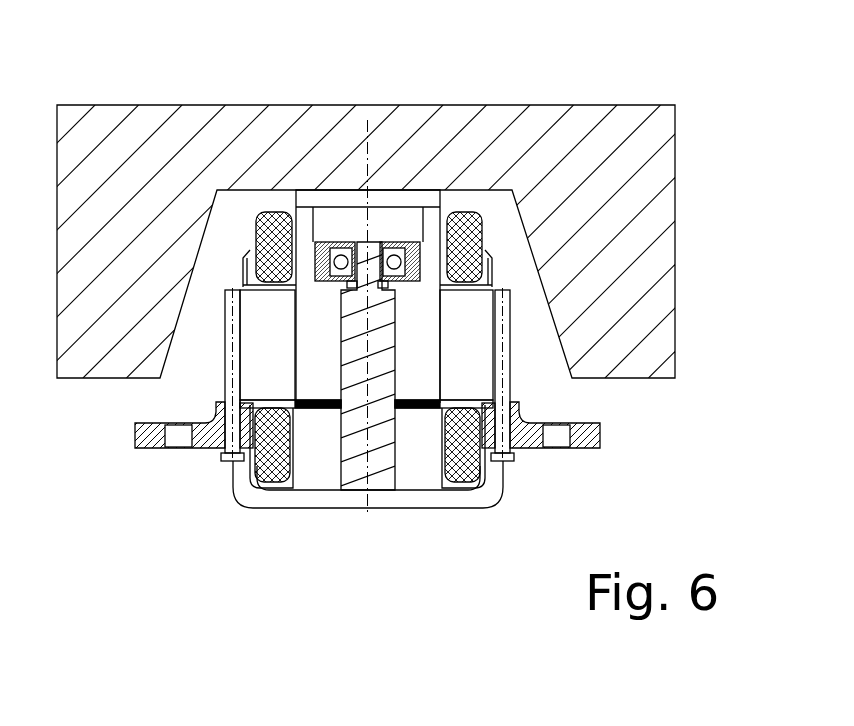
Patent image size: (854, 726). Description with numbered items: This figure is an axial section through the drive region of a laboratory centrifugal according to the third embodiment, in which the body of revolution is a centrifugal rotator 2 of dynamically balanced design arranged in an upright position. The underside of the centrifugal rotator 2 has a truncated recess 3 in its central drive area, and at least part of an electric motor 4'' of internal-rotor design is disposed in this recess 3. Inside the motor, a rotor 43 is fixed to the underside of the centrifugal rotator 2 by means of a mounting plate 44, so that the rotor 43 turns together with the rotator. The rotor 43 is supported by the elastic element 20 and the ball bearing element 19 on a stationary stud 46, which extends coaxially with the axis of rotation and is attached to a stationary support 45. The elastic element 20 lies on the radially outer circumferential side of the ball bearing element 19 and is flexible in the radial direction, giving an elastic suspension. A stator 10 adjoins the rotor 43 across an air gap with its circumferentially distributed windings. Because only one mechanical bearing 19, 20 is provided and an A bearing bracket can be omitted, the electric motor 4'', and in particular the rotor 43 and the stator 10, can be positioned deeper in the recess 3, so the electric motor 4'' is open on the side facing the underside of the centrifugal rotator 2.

The centrifugal rotator 2 is at (672, 180).
The truncated recess 3 is at (180, 376).
The electric motor 4'' is at (162, 584).
The stator 10 is at (258, 492).
The ball bearing element 19 is at (342, 256).
The elastic element 20 is at (318, 243).
The rotor 43 is at (312, 386).
The mounting plate 44 is at (421, 192).
The stationary support 45 is at (453, 492).
The stationary stud 46 is at (349, 480).